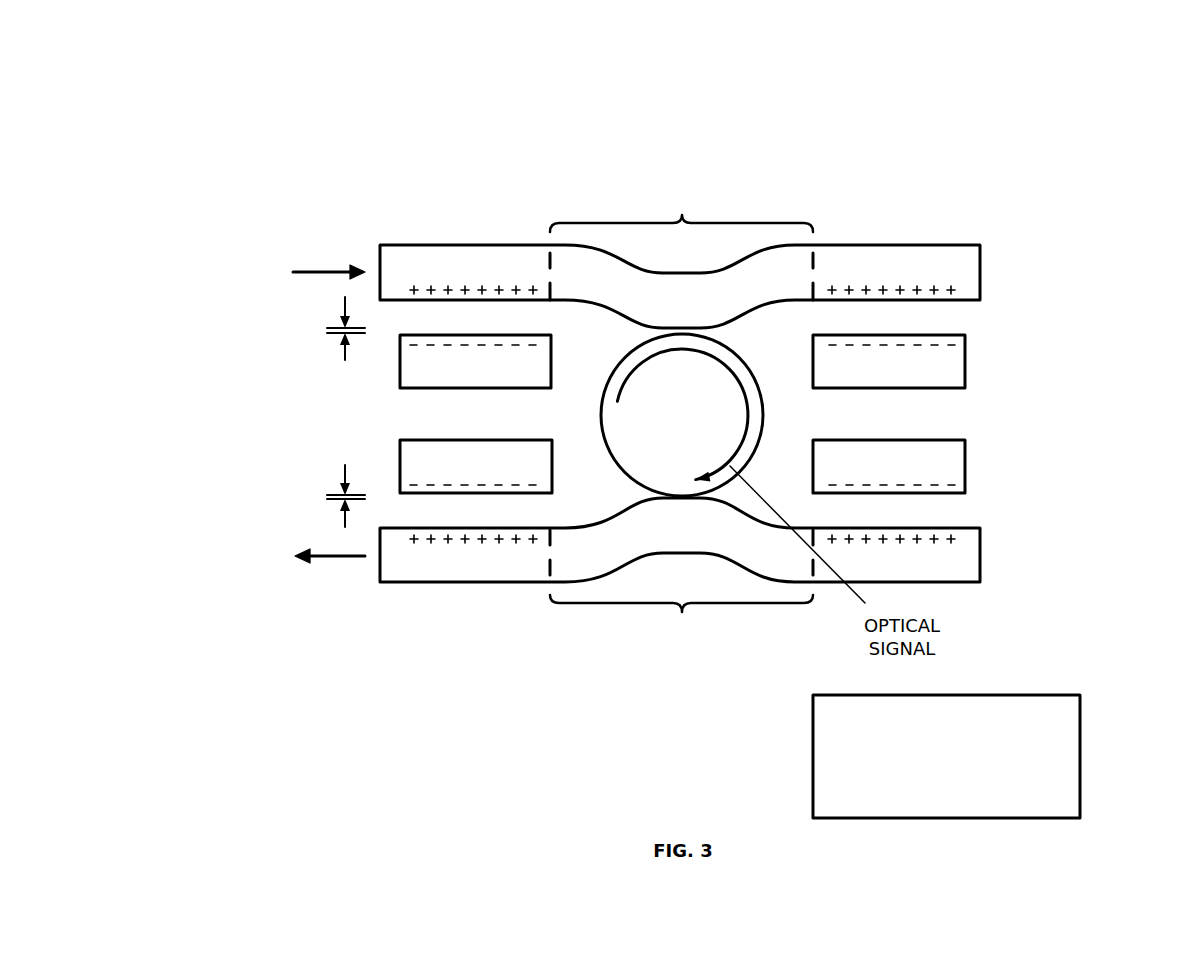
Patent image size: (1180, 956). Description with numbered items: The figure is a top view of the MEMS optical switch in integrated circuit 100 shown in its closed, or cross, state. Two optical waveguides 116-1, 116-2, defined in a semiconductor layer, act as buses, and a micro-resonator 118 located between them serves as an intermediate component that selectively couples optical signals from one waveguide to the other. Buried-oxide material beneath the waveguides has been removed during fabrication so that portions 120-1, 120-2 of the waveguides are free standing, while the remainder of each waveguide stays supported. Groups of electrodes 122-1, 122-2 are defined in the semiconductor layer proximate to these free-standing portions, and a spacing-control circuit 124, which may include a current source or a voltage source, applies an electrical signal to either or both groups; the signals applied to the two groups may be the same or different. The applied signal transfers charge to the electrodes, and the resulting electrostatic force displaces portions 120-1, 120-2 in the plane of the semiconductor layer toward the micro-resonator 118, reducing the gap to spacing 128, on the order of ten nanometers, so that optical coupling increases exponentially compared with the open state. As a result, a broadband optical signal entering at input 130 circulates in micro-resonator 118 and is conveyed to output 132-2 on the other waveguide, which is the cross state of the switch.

The integrated circuit 100 is at (328, 107).
The input 130 is at (327, 272).
The output 132-2 is at (337, 556).
The spacing 128 is at (330, 497).
The optical waveguide 116-1 is at (848, 273).
The optical waveguide 116-2 is at (953, 553).
The portion 120-1 is at (681, 196).
The portion 120-2 is at (681, 632).
The group of electrodes 122-1 is at (513, 380).
The group of electrodes 122-2 is at (875, 466).
The micro-resonator 118 is at (663, 403).
The spacing-control circuit 124 is at (946, 756).